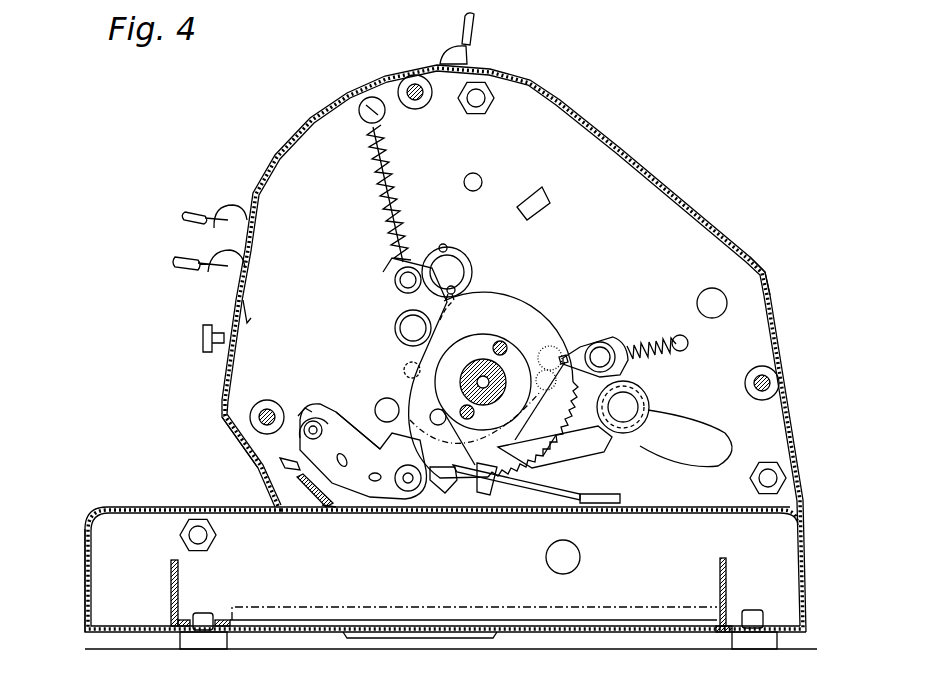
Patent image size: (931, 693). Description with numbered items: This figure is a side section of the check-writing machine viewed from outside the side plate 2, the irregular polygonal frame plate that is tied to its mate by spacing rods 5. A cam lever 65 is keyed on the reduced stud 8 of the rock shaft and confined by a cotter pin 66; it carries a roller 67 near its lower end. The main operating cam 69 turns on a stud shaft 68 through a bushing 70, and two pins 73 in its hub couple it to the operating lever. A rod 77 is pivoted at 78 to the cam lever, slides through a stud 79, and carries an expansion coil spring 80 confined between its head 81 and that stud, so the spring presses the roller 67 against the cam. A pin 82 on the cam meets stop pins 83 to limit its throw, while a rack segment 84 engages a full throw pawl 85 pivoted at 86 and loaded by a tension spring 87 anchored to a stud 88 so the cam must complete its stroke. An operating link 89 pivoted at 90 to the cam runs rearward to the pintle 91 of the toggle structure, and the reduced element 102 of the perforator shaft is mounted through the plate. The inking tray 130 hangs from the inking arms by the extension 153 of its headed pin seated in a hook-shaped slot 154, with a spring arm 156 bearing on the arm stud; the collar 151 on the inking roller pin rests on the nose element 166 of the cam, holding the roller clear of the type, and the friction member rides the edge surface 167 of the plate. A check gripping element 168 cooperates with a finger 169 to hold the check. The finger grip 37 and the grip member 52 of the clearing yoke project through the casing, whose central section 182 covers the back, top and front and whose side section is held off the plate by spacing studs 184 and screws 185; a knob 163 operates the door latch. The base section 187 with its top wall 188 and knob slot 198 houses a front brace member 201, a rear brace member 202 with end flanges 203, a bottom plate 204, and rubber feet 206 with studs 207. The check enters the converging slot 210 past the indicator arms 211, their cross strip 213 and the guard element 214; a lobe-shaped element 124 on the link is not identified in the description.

The side plate 2 is at (772, 353).
The spacing rod 5 is at (752, 479).
The reduced stud 8 is at (452, 262).
The finger grip 37 is at (196, 258).
The grip member 52 is at (472, 58).
The cam lever 65 is at (428, 247).
The cotter pin 66 is at (445, 244).
The roller 67 is at (395, 327).
The stud shaft 68 is at (480, 358).
The cam 69 is at (485, 292).
The bushing 70 is at (503, 368).
The pins 73 is at (500, 341).
The rod 77 is at (392, 173).
The pivotal connection 78 is at (395, 280).
The stud 79 is at (360, 116).
The expansion coil spring 80 is at (378, 160).
The head 81 is at (390, 262).
The pin 82 is at (563, 357).
The stop pins 83 is at (405, 365).
The rack segment 84 is at (549, 440).
The full throw pawl 85 is at (618, 343).
The pivot 86 is at (601, 342).
The tension spring 87 is at (652, 346).
The stud 88 is at (689, 341).
The operating link 89 is at (598, 441).
The pivot 90 is at (430, 413).
The pintle 91 is at (632, 402).
The reduced element 102 is at (582, 557).
The arm lobe 124 is at (697, 431).
The tray 130 is at (372, 494).
The collar 151 is at (408, 492).
The reduced extension 153 is at (300, 411).
The hook shaped slot 154 is at (311, 421).
The spring arm 156 is at (318, 424).
The knob 163 is at (205, 331).
The nose element 166 is at (443, 496).
The edge surface 167 is at (356, 430).
The check gripping element 168 is at (249, 319).
The finger 169 is at (488, 498).
The central casing section 182 is at (752, 259).
The spacing studs 184 is at (411, 76).
The screws 185 is at (256, 433).
The base casing section 187 is at (80, 539).
The top wall 188 is at (160, 507).
The slot 198 is at (585, 505).
The brace member 201 is at (170, 586).
The brace member 202 is at (722, 632).
The flange 203 is at (719, 576).
The bottom plate 204 is at (636, 641).
The feet 206 is at (208, 646).
The reduced stud 207 is at (203, 614).
The check slot 210 is at (545, 500).
The indicator arms 211 is at (290, 466).
The cross strip 213 is at (302, 487).
The guard element 214 is at (328, 509).